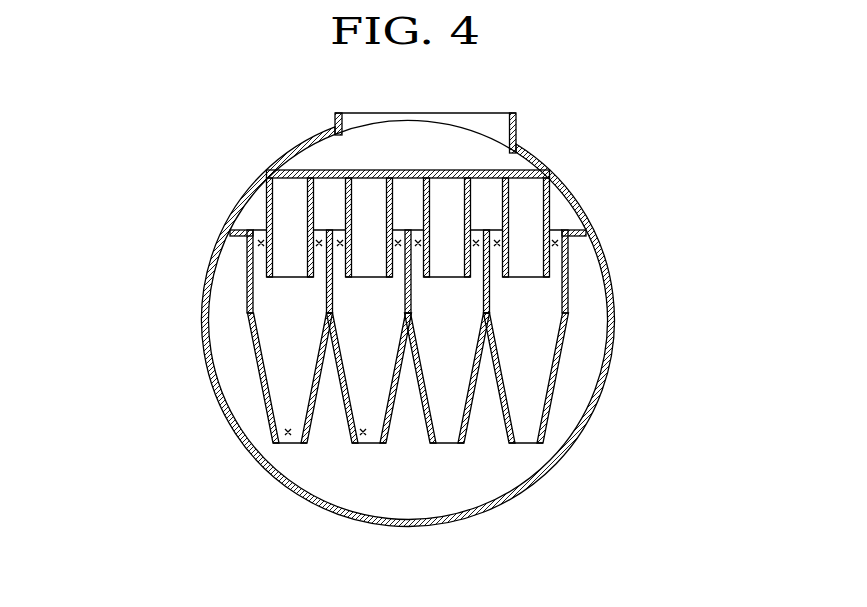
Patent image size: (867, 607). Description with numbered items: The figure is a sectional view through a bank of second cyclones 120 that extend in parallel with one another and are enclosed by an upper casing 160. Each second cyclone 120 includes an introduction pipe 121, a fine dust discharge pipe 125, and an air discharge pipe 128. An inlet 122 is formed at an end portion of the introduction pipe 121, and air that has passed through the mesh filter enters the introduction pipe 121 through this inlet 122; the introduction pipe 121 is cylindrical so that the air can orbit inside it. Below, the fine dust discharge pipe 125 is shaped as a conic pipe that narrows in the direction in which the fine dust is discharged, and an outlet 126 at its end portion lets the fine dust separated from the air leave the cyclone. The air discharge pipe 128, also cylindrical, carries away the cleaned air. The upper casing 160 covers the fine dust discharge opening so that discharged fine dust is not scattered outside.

The second cyclone 120 is at (112, 228).
The introduction pipe 121 is at (250, 275).
The inlet 122 is at (319, 240).
The fine dust discharge pipe 125 is at (258, 340).
The outlet 126 is at (360, 438).
The air discharge pipe 128 is at (240, 230).
The upper casing 160 is at (520, 487).